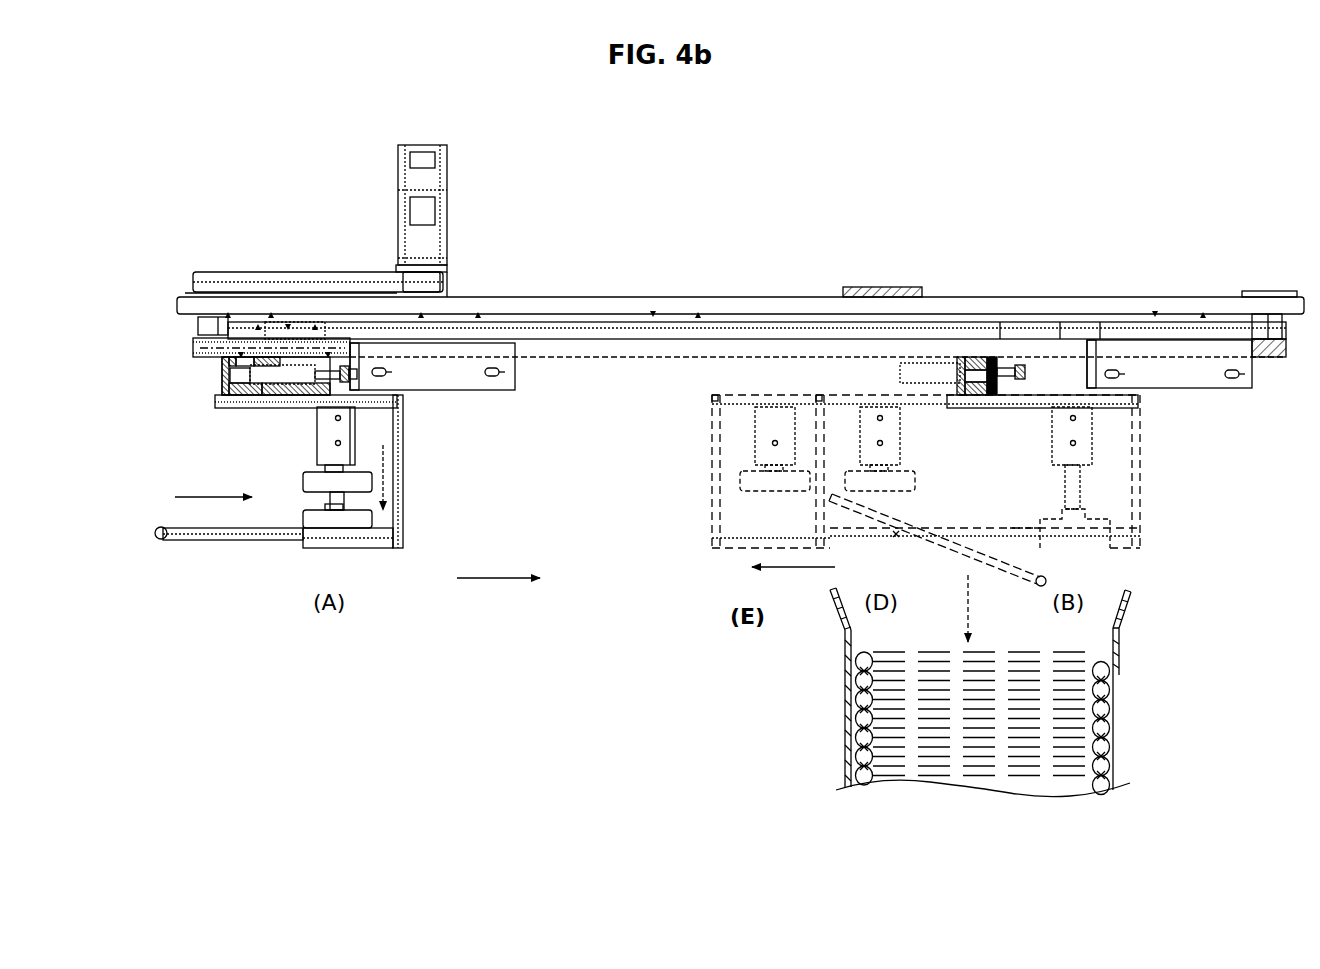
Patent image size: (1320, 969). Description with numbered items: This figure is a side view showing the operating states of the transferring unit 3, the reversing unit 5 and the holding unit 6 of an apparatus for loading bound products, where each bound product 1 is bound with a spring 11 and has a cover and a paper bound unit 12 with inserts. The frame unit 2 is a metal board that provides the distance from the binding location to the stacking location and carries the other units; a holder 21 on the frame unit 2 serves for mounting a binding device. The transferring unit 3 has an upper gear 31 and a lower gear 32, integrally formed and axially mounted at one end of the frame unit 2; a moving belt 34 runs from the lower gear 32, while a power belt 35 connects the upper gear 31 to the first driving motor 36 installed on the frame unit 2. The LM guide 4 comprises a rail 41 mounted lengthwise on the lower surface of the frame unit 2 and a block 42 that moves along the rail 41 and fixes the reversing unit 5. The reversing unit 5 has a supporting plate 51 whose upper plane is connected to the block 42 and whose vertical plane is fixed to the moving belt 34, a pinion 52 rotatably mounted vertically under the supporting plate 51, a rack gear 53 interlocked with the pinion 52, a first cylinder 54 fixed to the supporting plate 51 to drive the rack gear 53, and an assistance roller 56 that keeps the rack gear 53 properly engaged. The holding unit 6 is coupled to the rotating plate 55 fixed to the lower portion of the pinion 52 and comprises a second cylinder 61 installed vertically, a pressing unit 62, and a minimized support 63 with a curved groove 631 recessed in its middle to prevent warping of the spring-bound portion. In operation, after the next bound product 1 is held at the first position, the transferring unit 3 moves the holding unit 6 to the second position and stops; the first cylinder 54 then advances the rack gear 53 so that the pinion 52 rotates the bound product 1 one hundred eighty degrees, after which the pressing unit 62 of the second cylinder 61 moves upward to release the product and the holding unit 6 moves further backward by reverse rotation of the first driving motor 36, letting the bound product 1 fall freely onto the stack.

The bound product 1 is at (232, 545).
The frame unit 2 is at (757, 290).
The transferring unit 3 is at (334, 232).
The LM guide 4 is at (628, 335).
The reversing unit 5 is at (150, 371).
The holding unit 6 is at (406, 552).
The spring 11 is at (160, 541).
The paper bound unit 12 is at (210, 541).
The holder 21 is at (912, 288).
The upper gear 31 is at (213, 272).
The lower gear 32 is at (198, 334).
The moving belt 34 is at (528, 345).
The power belt 35 is at (260, 278).
The first driving motor 36 is at (398, 205).
The rail 41 is at (597, 325).
The block 42 is at (294, 336).
The supporting plate 51 is at (215, 348).
The pinion 52 is at (222, 386).
The rack gear 53 is at (280, 384).
The first cylinder 54 is at (480, 385).
The rotating plate 55 is at (258, 408).
The assistance roller 56 is at (246, 396).
The second cylinder 61 is at (355, 433).
The pressing unit 62 is at (365, 480).
The support 63 is at (365, 548).
The curved groove 631 is at (318, 518).